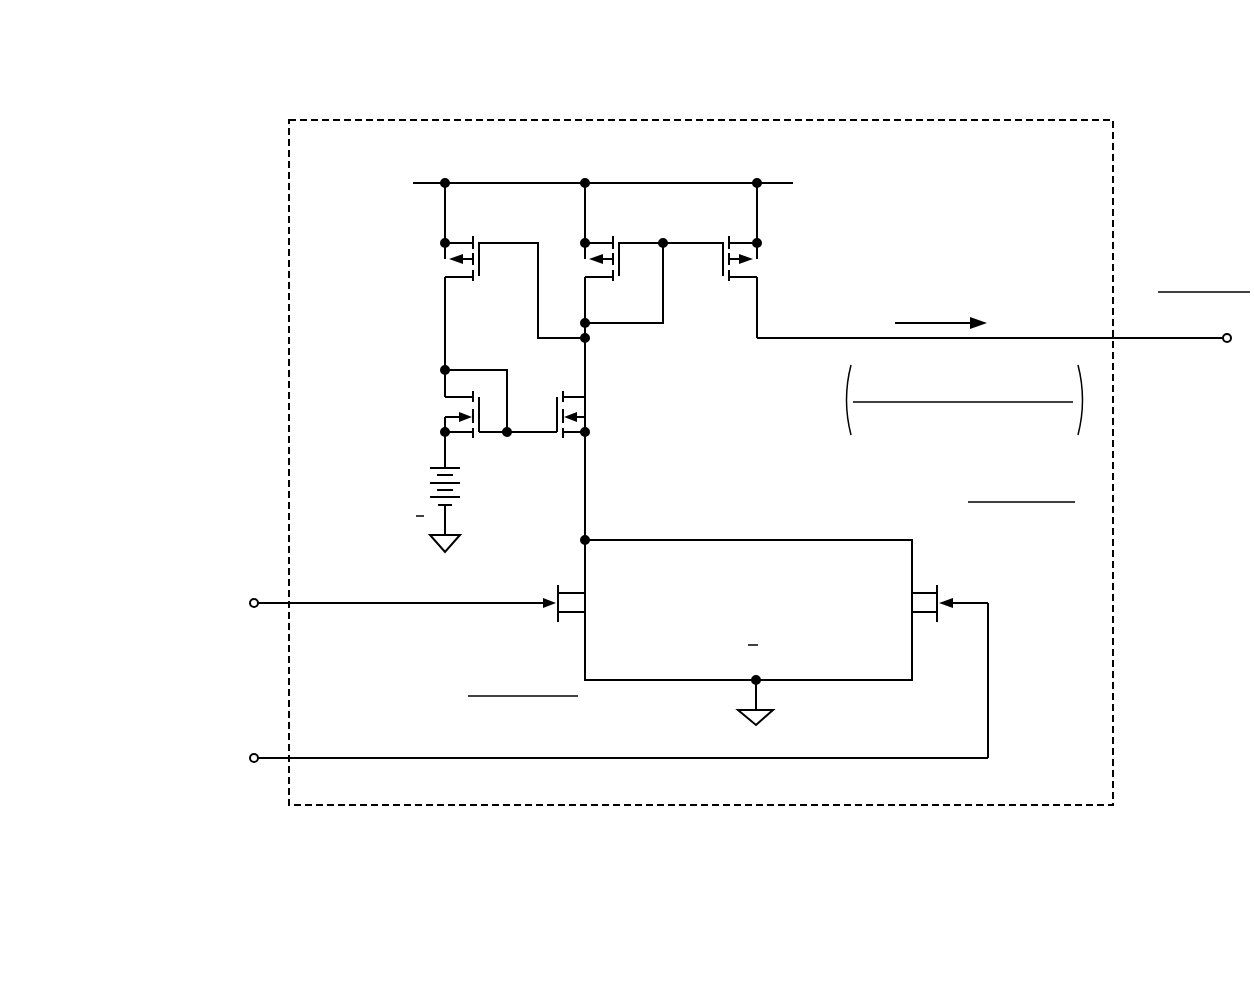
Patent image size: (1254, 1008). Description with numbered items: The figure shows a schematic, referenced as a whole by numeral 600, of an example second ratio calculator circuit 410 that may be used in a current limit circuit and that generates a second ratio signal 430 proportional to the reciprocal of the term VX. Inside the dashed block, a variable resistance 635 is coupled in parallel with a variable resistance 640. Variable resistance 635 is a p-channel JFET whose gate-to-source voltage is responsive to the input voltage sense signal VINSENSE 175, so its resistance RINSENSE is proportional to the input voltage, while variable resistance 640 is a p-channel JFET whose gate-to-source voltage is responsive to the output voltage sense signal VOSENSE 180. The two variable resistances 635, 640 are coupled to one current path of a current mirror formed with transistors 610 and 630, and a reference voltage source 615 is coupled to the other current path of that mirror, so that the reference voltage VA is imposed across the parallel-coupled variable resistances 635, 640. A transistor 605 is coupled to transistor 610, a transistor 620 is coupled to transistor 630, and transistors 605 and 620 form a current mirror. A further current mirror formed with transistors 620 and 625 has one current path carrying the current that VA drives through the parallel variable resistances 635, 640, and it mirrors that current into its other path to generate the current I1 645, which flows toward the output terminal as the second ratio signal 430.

The second ratio calculator circuit 600 is at (205, 343).
The second ratio calculator circuit 410 is at (385, 115).
The transistor 605 is at (433, 252).
The transistor 610 is at (435, 400).
The reference voltage source 615 is at (468, 482).
The transistor 620 is at (603, 228).
The transistor 625 is at (738, 230).
The transistor 630 is at (597, 408).
The variable resistance 635 is at (568, 582).
The variable resistance 640 is at (928, 580).
The output current I1 645 is at (960, 303).
The second ratio signal 430 is at (1167, 345).
The input voltage sense signal 175 is at (267, 593).
The output voltage sense signal 180 is at (267, 770).